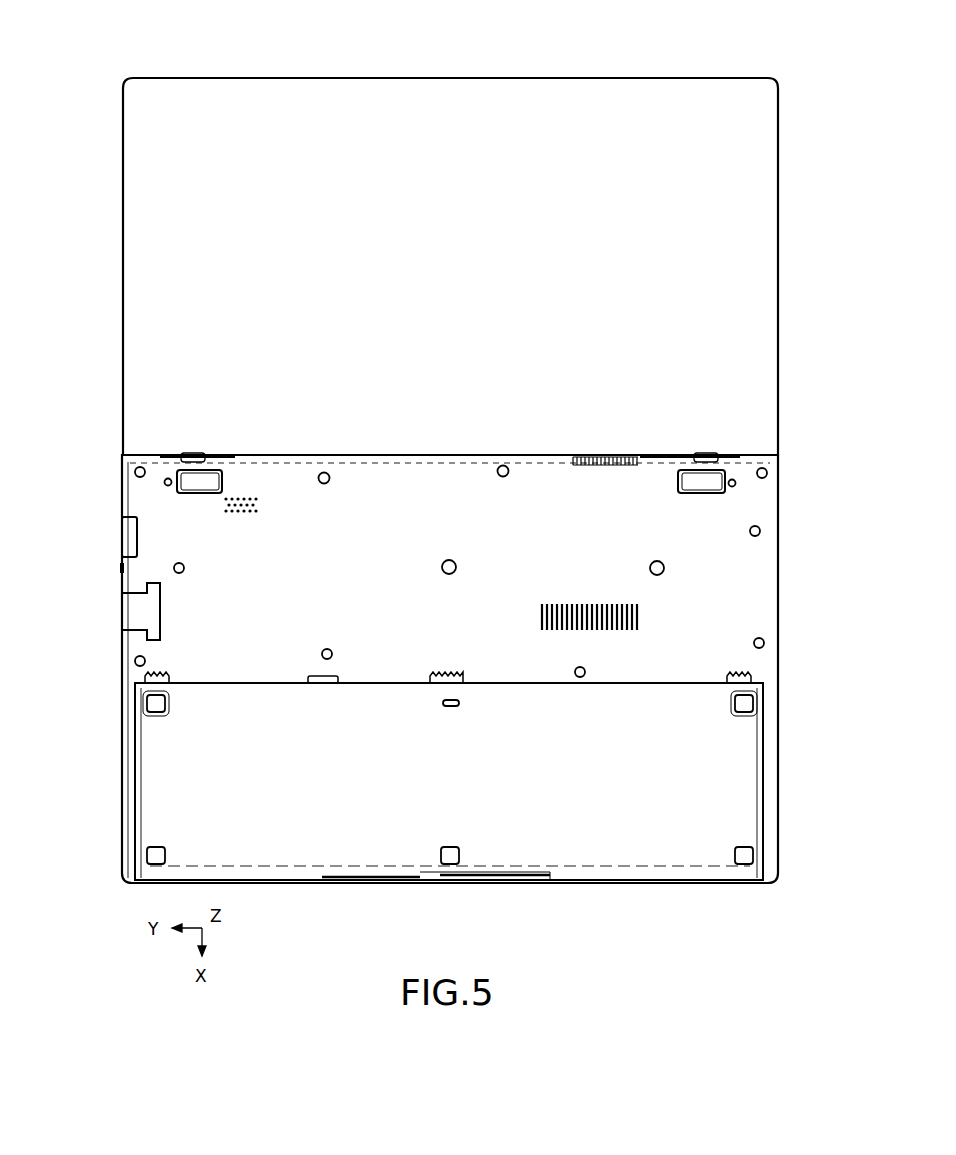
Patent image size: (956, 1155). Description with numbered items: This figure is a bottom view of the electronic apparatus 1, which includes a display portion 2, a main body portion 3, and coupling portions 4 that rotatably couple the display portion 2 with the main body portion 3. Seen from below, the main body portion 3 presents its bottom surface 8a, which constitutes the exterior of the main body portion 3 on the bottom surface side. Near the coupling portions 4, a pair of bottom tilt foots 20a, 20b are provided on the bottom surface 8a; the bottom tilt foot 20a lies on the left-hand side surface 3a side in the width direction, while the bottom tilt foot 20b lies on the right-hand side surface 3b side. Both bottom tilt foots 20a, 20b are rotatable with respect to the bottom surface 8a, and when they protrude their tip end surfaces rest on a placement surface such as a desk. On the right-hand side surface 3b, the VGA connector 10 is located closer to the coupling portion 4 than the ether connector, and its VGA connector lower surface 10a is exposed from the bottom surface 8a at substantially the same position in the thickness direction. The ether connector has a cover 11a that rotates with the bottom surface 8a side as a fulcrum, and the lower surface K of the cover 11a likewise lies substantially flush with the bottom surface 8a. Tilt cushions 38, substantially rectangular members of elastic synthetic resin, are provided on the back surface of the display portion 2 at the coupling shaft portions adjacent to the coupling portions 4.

The electronic apparatus 1 is at (446, 70).
The display portion 2 is at (779, 250).
The main body portion 3 is at (779, 575).
The left-hand side surface 3a is at (779, 712).
The right-hand side surface 3b is at (122, 750).
The coupling portion 4 is at (172, 455).
The tilt cushion 38 is at (193, 452).
The bottom tilt foot 20a is at (706, 485).
The bottom tilt foot 20b is at (196, 483).
The VGA connector 10 is at (92, 557).
The VGA connector lower surface 10a is at (130, 536).
The cover 11a is at (106, 617).
The lower surface K is at (132, 611).
The bottom surface 8a is at (765, 612).